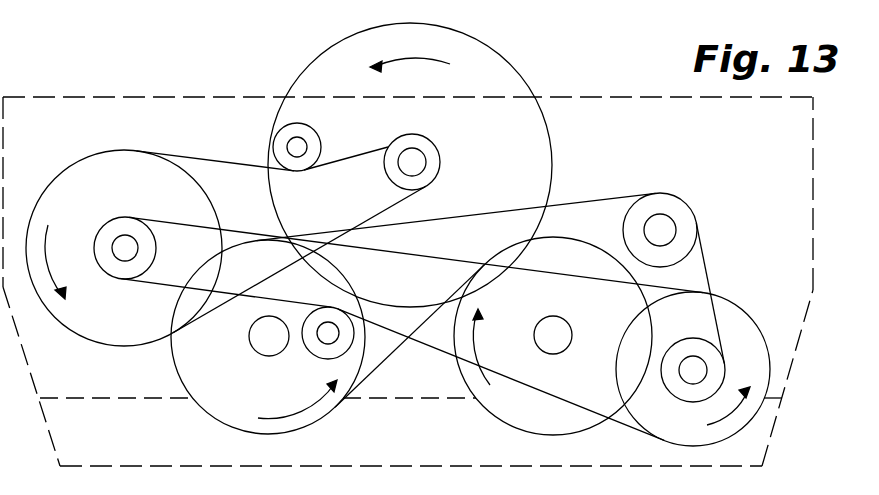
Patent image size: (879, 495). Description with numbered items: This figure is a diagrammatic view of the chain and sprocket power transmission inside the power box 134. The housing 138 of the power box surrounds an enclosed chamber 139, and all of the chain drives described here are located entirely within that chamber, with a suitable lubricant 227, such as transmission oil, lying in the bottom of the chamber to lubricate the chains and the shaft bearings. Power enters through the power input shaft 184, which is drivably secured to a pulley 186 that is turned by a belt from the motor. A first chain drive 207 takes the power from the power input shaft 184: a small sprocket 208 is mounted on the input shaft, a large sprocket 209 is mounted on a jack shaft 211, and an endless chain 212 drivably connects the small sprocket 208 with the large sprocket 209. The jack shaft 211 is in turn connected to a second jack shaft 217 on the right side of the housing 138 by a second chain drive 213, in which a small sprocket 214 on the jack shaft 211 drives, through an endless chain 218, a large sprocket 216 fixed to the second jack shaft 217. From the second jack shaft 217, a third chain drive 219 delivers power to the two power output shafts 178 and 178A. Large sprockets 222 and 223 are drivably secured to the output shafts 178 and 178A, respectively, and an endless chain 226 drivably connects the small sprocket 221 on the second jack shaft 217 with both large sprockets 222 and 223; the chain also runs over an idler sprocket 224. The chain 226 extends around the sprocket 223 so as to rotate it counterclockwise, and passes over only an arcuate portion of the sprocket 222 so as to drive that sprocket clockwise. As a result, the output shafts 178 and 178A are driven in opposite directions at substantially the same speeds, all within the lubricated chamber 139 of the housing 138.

The power box 134 is at (66, 97).
The housing 138 is at (653, 97).
The enclosed chamber 139 is at (736, 126).
The lubricant 227 is at (116, 398).
The large sprocket 209 is at (212, 199).
The small sprocket 214 is at (105, 228).
The jack shaft 211 is at (123, 256).
The endless chain 212 is at (183, 158).
The first chain drive 207 is at (218, 162).
The pulley 186 is at (497, 50).
The small sprocket 208 is at (400, 182).
The power input shaft 184 is at (417, 163).
The large sprocket 223 is at (309, 424).
The power output shaft 178A is at (269, 356).
The second chain drive 213 is at (433, 347).
The endless chain 218 is at (626, 427).
The large sprocket 222 is at (512, 408).
The power output shaft 178 is at (549, 354).
The third chain drive 219 is at (611, 197).
The idler sprocket 224 is at (696, 220).
The endless chain 226 is at (705, 266).
The large sprocket 216 is at (742, 309).
The small sprocket 221 is at (724, 360).
The second jack shaft 217 is at (690, 368).